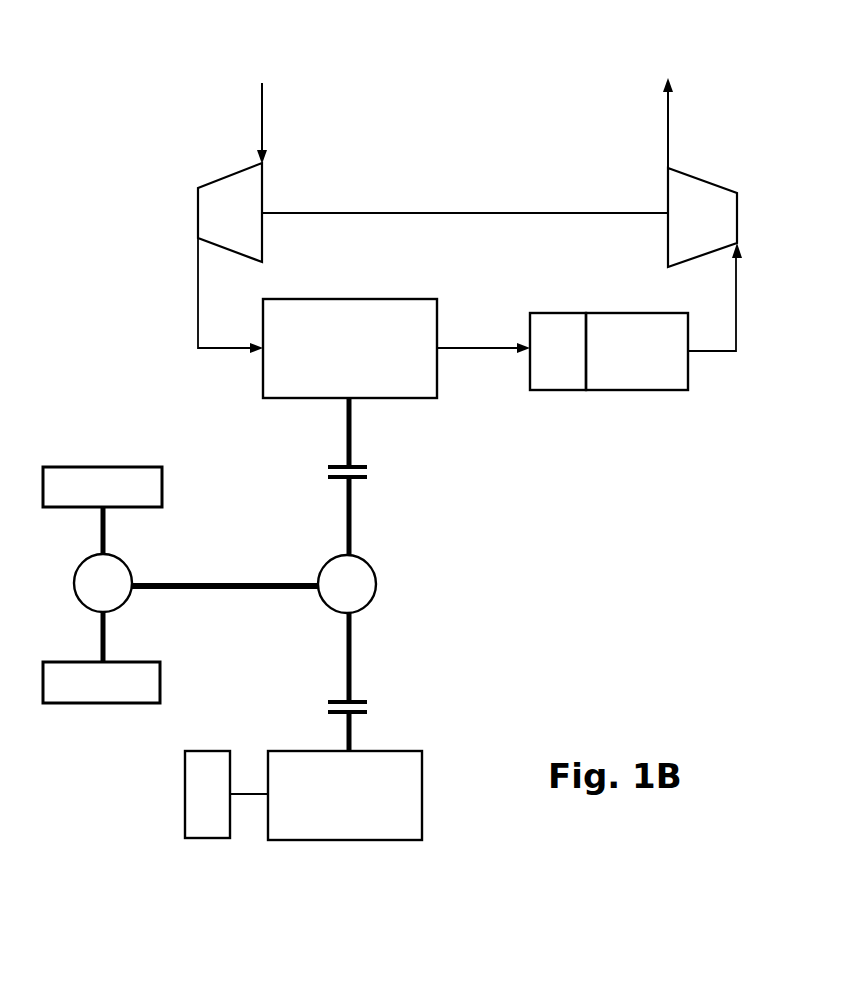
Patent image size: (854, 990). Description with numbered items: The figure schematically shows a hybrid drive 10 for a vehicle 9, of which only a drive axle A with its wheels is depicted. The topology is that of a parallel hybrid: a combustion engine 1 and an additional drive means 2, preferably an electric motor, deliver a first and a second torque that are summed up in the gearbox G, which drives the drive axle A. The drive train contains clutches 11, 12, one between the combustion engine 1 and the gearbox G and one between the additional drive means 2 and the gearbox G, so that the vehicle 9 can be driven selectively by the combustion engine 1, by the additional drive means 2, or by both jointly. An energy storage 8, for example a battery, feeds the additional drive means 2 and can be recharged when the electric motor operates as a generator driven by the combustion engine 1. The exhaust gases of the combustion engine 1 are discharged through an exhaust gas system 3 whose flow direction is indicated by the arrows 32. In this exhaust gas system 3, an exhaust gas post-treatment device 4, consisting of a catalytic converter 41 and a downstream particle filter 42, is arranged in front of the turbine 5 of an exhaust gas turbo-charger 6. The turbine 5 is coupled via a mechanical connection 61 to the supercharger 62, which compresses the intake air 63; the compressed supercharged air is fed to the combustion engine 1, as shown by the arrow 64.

The combustion engine 1 is at (368, 363).
The additional drive means 2 is at (362, 823).
The exhaust gas system 3 is at (730, 425).
The exhaust gas post-treatment device 4 is at (603, 385).
The catalytic converter 41 is at (570, 367).
The particle filter 42 is at (652, 367).
The turbine 5 is at (708, 238).
The exhaust gas turbo-charger 6 is at (453, 80).
The mechanical connection 61 is at (502, 212).
The supercharger 62 is at (240, 226).
The intake air 63 is at (262, 107).
The arrow for compressed supercharged air 64 is at (200, 354).
The arrows indicating exhaust gas flow direction 32 is at (672, 128).
The energy storage 8 is at (216, 811).
The vehicle 9 is at (68, 467).
The hybrid drive 10 is at (500, 559).
The clutch 11 is at (316, 470).
The clutch 12 is at (314, 700).
The drive axle A is at (107, 530).
The gearbox G is at (333, 575).